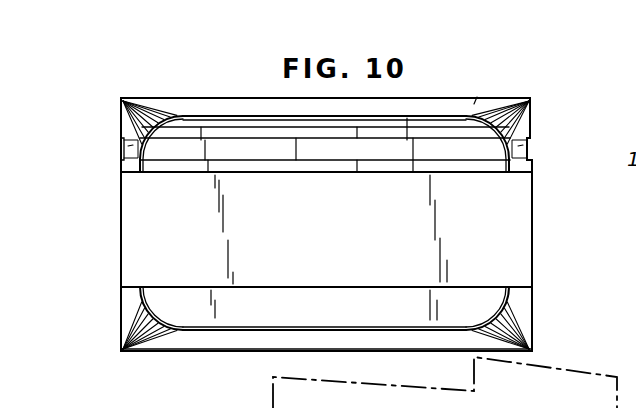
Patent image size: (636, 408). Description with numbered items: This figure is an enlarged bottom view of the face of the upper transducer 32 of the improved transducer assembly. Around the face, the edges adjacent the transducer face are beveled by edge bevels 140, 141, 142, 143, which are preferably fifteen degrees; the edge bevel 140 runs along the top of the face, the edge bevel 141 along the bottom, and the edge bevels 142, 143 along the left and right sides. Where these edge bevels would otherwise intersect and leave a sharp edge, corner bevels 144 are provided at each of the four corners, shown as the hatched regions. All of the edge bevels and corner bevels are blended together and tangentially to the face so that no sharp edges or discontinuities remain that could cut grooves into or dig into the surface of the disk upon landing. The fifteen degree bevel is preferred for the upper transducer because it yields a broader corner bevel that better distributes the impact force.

The upper transducer 32 is at (506, 95).
The edge bevel 140 is at (413, 107).
The edge bevel 141 is at (258, 344).
The edge bevel 142 is at (124, 153).
The edge bevel 143 is at (530, 163).
The corner bevel 144 is at (128, 113).